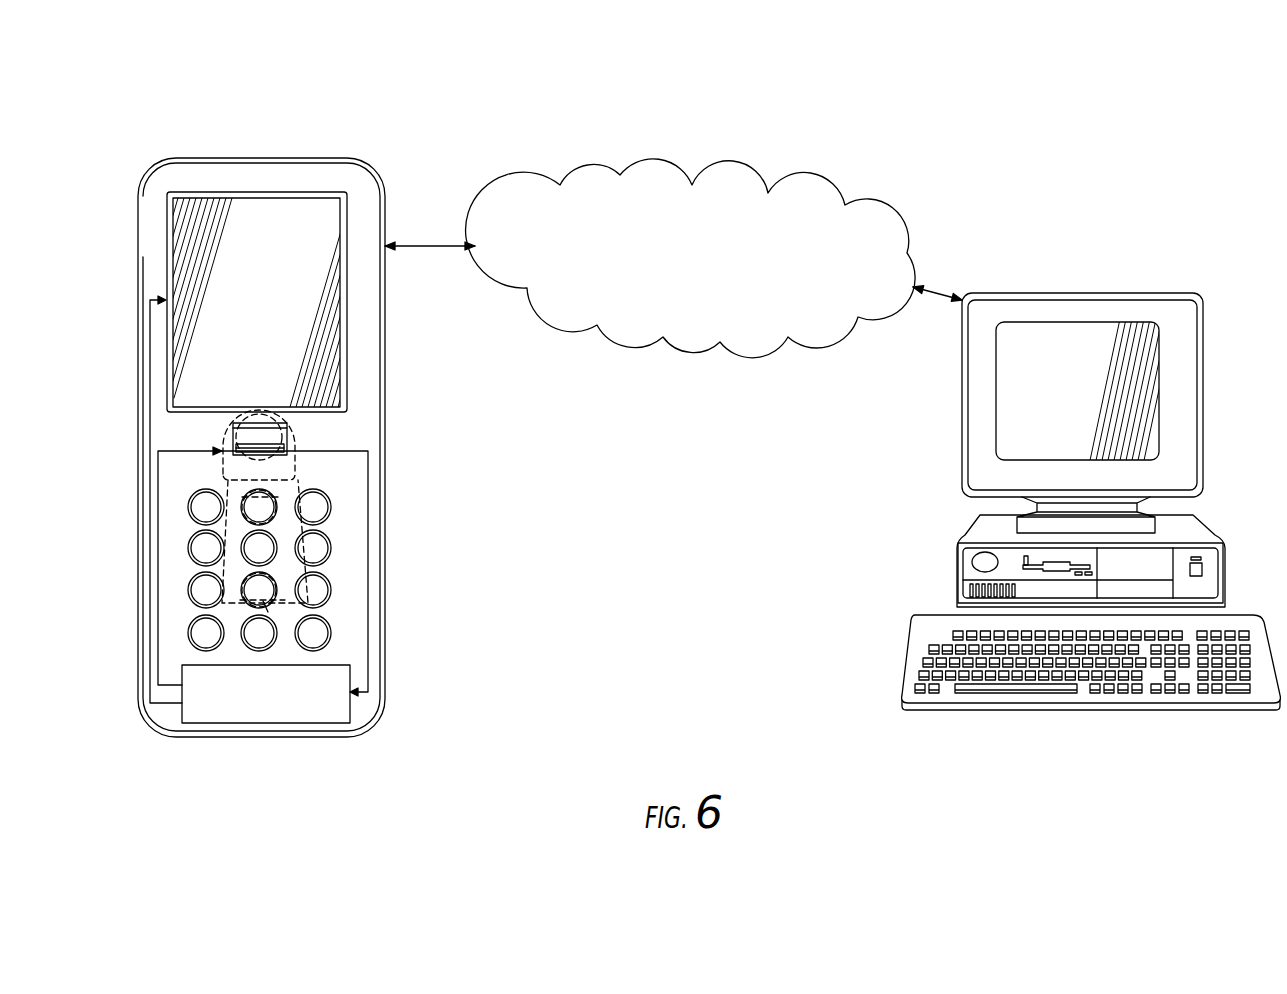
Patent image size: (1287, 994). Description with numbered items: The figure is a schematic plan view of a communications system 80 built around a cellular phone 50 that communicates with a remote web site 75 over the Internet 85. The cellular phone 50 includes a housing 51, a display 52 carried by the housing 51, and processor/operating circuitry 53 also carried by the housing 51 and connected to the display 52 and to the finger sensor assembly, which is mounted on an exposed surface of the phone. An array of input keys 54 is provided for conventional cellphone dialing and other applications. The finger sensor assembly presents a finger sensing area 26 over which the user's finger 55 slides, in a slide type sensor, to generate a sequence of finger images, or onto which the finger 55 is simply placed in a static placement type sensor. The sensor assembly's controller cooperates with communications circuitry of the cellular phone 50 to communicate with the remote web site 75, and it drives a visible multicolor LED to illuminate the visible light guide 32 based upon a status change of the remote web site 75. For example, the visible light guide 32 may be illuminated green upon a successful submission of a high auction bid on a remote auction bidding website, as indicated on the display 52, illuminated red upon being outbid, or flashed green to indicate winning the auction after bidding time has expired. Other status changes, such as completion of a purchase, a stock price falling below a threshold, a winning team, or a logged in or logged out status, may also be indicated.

The cellular phone 50 is at (137, 153).
The housing 51 is at (138, 257).
The display 52 is at (188, 283).
The processor/operating circuitry 53 is at (327, 712).
The input keys 54 is at (203, 633).
The finger 55 is at (238, 492).
The finger sensing area 26 is at (298, 430).
The visible light guide 32 is at (290, 448).
The communications system 80 is at (510, 107).
The Internet 85 is at (605, 168).
The remote web site 75 is at (1048, 293).